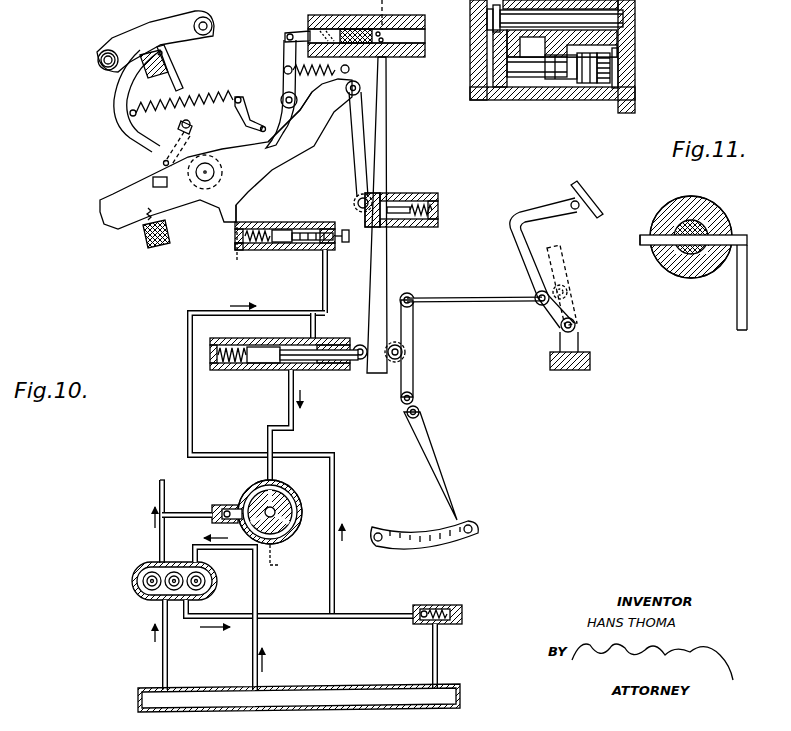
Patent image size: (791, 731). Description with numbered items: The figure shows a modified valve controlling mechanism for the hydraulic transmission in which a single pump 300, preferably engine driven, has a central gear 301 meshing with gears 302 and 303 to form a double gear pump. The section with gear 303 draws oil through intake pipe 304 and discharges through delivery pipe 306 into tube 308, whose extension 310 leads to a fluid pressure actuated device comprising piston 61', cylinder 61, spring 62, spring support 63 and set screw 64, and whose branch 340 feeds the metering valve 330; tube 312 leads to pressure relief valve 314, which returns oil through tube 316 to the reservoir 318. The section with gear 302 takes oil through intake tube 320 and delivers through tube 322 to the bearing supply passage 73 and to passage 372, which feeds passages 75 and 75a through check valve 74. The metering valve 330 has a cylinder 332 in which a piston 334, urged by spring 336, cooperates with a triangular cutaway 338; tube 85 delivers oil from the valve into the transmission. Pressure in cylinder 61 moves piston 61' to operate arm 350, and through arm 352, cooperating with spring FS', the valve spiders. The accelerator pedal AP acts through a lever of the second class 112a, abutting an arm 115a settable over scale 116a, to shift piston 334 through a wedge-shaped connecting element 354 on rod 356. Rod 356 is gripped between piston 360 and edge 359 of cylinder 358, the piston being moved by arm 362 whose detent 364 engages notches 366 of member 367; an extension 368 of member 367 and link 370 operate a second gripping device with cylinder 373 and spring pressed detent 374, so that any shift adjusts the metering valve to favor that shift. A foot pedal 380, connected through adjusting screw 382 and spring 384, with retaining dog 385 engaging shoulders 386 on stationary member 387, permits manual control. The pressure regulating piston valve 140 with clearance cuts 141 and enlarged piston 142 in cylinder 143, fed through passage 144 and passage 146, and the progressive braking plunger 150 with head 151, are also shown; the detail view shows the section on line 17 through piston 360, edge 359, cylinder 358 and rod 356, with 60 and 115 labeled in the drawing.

In FIG. 10, the retaining dog 385 is at (140, 30).
In FIG. 10, the stationary member 387 is at (112, 47).
In FIG. 10, the shoulders 386 is at (180, 48).
In FIG. 10, the spring 384 is at (196, 101).
In FIG. 10, the foot pedal 380 is at (140, 130).
In FIG. 10, the adjusting screw 382 is at (163, 162).
In FIG. 10, the arm 352 is at (116, 207).
In FIG. 10, the notches 366 is at (244, 118).
In FIG. 10, the member 367 is at (225, 172).
In FIG. 10, the spring FS' is at (125, 229).
In FIG. 10, the arm 350 is at (220, 218).
In FIG. 10, the valve stop 60 is at (240, 251).
In FIG. 10, the cylinder 61 is at (290, 256).
In FIG. 10, the piston 61' is at (248, 229).
In FIG. 10, the spring 62 is at (262, 230).
In FIG. 10, the spring support 63 is at (278, 246).
In FIG. 10, the set screw 64 is at (344, 229).
In FIG. 10, the extension 310 is at (329, 278).
In FIG. 10, the piston 360 is at (284, 41).
In FIG. 11, the piston 360 is at (700, 198).
In FIG. 10, the arm 362 is at (283, 56).
In FIG. 10, the detent 364 is at (270, 128).
In FIG. 10, the pivot axis 17 is at (392, 87).
In FIG. 10, the extension 368 is at (308, 130).
In FIG. 10, the link 370 is at (358, 172).
In FIG. 10, the cylinder 358 is at (415, 47).
In FIG. 11, the cylinder 358 is at (681, 275).
In FIG. 10, the edge 359 is at (392, 86).
In FIG. 11, the edge 359 is at (672, 205).
In FIG. 10, the rod 356 is at (370, 13).
In FIG. 11, the rod 356 is at (650, 242).
In FIG. 10, the passage 146 is at (502, 75).
In FIG. 10, the enlarged head 151 is at (500, 20).
In FIG. 10, the piston 150 is at (618, 14).
In FIG. 10, the passage 144 is at (613, 45).
In FIG. 10, the clearance cuts 141 is at (530, 70).
In FIG. 10, the valve 140 is at (565, 72).
In FIG. 10, the piston 142 is at (595, 100).
In FIG. 10, the cylinder 143 is at (606, 103).
In FIG. 10, the spring pressed detent 374 is at (422, 201).
In FIG. 10, the tube 312 is at (398, 193).
In FIG. 10, the cylinder 373 is at (380, 228).
In FIG. 10, the tube 308 is at (290, 301).
In FIG. 10, the tube 340 is at (312, 322).
In FIG. 10, the spring 336 is at (215, 352).
In FIG. 10, the cylinder 332 is at (216, 372).
In FIG. 10, the piston 334 is at (258, 371).
In FIG. 10, the metering valve 330 is at (285, 371).
In FIG. 10, the cutaway portion 338 is at (302, 376).
In FIG. 10, the connecting element 354 is at (395, 296).
In FIG. 10, the rod 115 is at (466, 297).
In FIG. 10, the accelerator pedal AP is at (522, 215).
In FIG. 10, the lever of the second class 112a is at (416, 382).
In FIG. 10, the arm 115a is at (440, 478).
In FIG. 10, the scale 116a is at (460, 543).
In FIG. 10, the tube 85 is at (276, 481).
In FIG. 10, the passage 75 is at (243, 492).
In FIG. 10, the check valve 74 is at (218, 501).
In FIG. 10, the passage 75a is at (280, 566).
In FIG. 10, the delivery tube 322 is at (160, 548).
In FIG. 10, the oil supply passage 73 is at (159, 492).
In FIG. 10, the passage 372 is at (174, 512).
In FIG. 10, the pump 300 is at (131, 569).
In FIG. 10, the gear 302 is at (143, 582).
In FIG. 10, the central gear 301 is at (165, 593).
In FIG. 10, the gear 303 is at (205, 578).
In FIG. 10, the intake tube 320 is at (162, 660).
In FIG. 10, the delivery pipe 306 is at (278, 614).
In FIG. 10, the intake pipe 304 is at (259, 642).
In FIG. 10, the pressure relief valve 314 is at (428, 603).
In FIG. 10, the tube 316 is at (440, 648).
In FIG. 10, the oil reservoir 318 is at (461, 693).